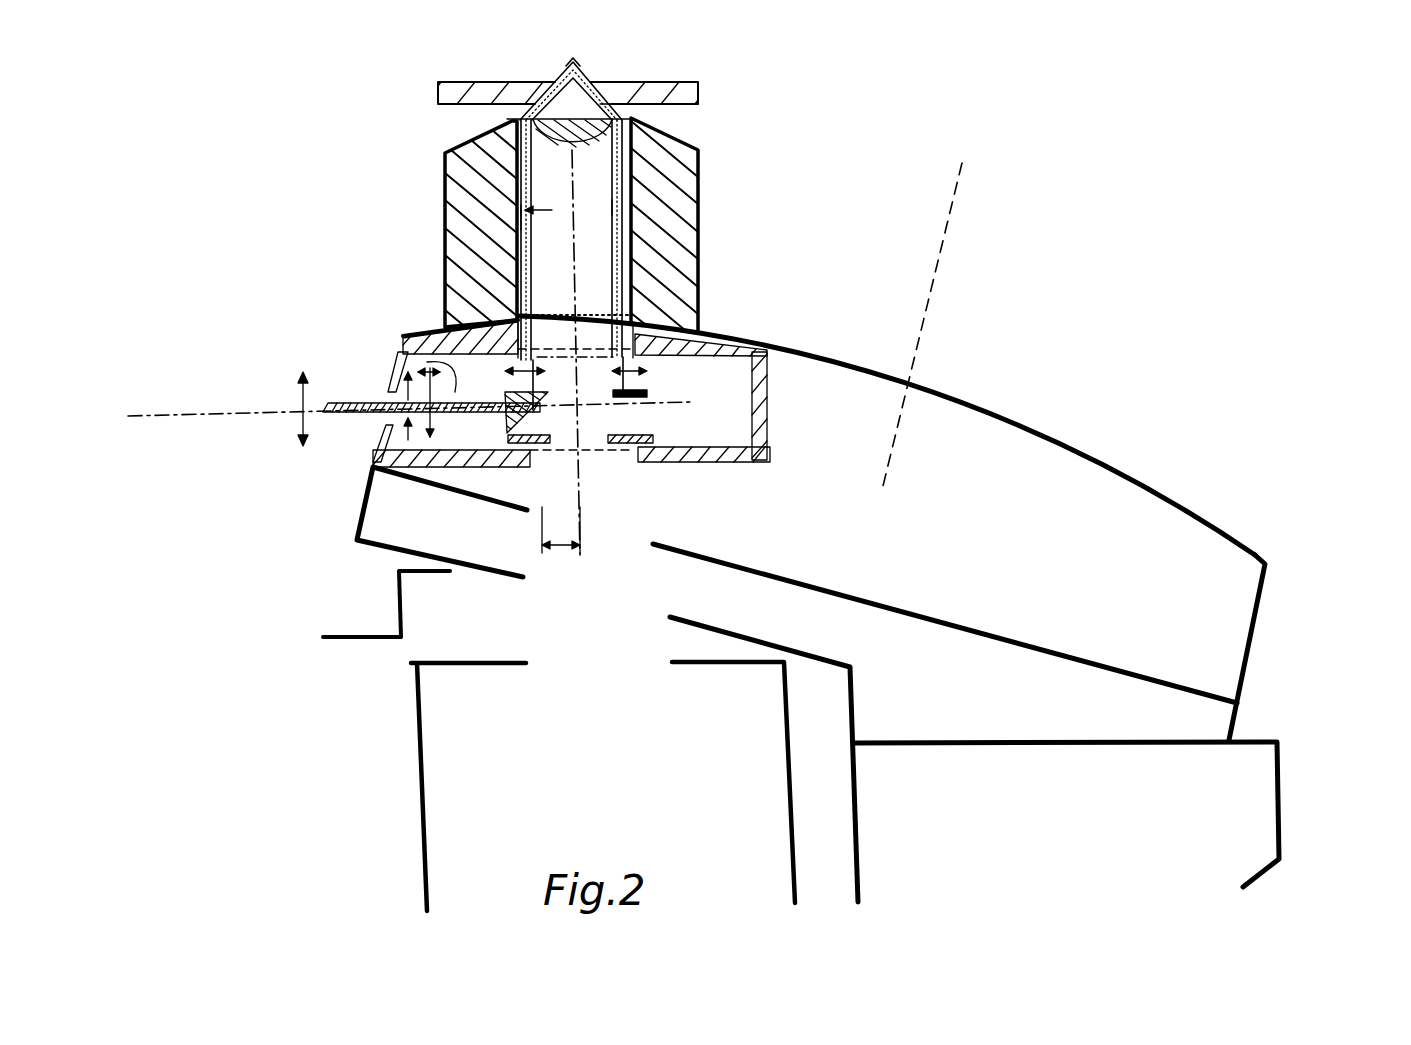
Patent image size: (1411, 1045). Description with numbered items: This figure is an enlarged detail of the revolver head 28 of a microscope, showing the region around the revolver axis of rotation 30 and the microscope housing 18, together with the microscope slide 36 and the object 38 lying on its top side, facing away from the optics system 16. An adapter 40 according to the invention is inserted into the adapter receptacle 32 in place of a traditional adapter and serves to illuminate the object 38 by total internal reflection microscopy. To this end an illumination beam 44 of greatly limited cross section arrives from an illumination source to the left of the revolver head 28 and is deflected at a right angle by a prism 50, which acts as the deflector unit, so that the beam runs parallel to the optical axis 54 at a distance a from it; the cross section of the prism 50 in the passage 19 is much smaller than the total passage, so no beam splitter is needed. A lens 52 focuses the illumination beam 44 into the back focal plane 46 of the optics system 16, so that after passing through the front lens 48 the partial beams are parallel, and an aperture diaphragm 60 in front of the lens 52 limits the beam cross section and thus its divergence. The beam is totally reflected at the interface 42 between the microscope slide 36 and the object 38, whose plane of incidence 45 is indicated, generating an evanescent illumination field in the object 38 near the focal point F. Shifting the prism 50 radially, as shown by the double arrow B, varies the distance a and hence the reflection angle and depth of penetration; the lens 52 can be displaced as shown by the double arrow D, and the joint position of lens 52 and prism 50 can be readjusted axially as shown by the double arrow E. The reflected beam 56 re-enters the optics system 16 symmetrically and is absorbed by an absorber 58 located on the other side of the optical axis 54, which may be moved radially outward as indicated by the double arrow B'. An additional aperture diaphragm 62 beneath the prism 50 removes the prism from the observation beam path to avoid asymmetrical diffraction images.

The optics system 16 is at (700, 237).
The microscope housing 18 is at (1284, 791).
The passage 19 is at (622, 525).
The revolver head 28 is at (1061, 434).
The revolver axis of rotation 30 is at (944, 273).
The adapter receptacle 32 is at (397, 340).
The microscope slide 36 is at (690, 106).
The object 38 is at (587, 73).
The adapter 40 is at (767, 460).
The interface 42 is at (697, 80).
The illumination beam 44 is at (532, 230).
The plane of incidence of the illumination beam 45 is at (550, 405).
The back focal plane 46 is at (597, 313).
The front lens 48 is at (622, 165).
The prism 50 is at (503, 427).
The lens 52 is at (433, 328).
The optical axis 54 is at (520, 216).
The reflected beam 56 is at (613, 205).
The absorber 58 is at (643, 403).
The aperture diaphragm 60 is at (373, 447).
The additional aperture diaphragm 62 is at (627, 443).
The focal point of the optics system F is at (547, 73).
The displacement of the focusing lenses in the radial direction D is at (412, 331).
The displacement of the deflecting unit in the axial direction E is at (293, 425).
The displacement of the deflecting unit in the radial direction B is at (553, 338).
The displacement of the absorber in the radial direction B' is at (602, 338).
The distance between the optical axis and the illumination beam a is at (561, 546).